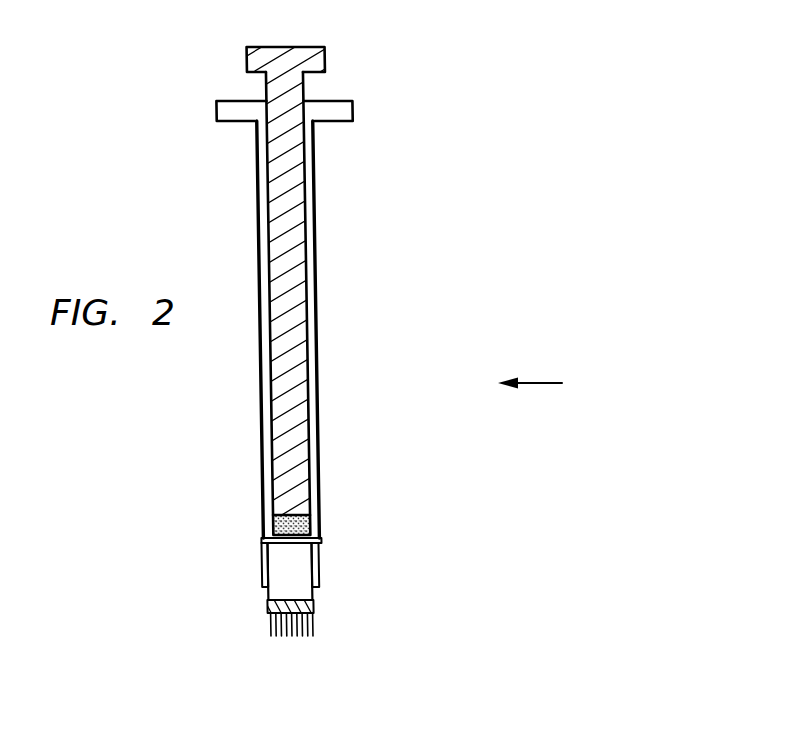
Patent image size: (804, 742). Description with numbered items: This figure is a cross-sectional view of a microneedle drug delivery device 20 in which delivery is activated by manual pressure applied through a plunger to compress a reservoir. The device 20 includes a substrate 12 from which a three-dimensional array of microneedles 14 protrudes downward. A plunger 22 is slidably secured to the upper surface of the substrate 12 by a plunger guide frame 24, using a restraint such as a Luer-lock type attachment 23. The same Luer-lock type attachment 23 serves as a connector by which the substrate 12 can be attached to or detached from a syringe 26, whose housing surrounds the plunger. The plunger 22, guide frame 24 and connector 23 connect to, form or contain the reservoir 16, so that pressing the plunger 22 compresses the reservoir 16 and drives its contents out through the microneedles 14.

The substrate 12 is at (315, 605).
The microneedles 14 is at (315, 625).
The reservoir 16 is at (283, 592).
The microneedle device 20 is at (245, 615).
The plunger 22 is at (325, 55).
The Luer-lock type attachment 23 is at (322, 573).
The plunger guide frame 24 is at (316, 385).
The syringe 26 is at (548, 386).